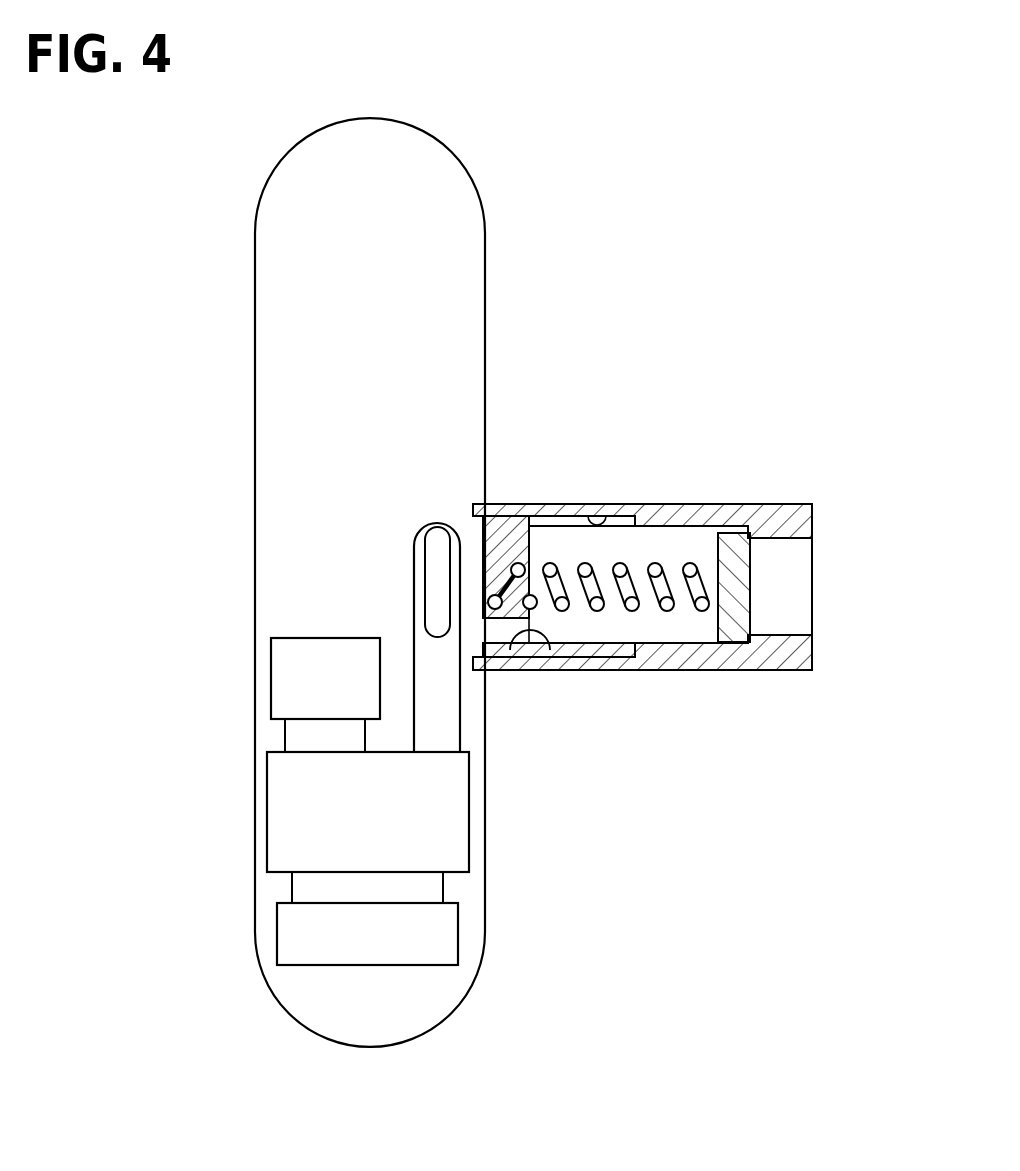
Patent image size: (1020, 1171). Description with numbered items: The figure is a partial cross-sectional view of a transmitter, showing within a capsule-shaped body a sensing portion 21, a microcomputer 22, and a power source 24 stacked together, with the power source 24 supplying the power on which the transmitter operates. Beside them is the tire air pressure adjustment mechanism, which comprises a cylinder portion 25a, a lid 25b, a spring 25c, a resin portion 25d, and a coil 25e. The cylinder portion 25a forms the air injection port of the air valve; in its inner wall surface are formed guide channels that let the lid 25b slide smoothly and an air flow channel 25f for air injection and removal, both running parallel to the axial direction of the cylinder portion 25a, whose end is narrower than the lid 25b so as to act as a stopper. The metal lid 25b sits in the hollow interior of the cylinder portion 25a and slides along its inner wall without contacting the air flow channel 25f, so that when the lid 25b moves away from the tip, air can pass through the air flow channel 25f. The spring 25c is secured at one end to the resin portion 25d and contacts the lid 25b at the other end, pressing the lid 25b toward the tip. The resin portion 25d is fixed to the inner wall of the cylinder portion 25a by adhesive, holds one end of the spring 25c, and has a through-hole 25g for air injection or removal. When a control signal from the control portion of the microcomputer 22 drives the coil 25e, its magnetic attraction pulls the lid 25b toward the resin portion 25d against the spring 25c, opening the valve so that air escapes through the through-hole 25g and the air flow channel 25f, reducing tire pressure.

The sensing portion 21 is at (270, 685).
The microcomputer 22 is at (267, 800).
The power source 24 is at (277, 935).
The cylinder portion 25a is at (777, 503).
The lid 25b is at (750, 573).
The spring 25c is at (698, 607).
The resin portion 25d is at (498, 505).
The coil 25e is at (413, 592).
The air flow channel 25f is at (587, 505).
The through-hole 25g is at (550, 650).